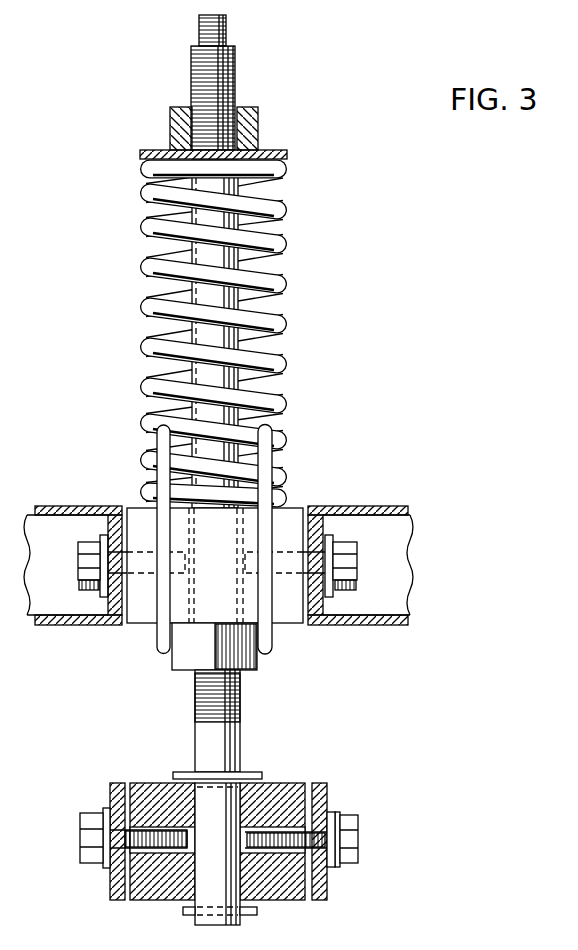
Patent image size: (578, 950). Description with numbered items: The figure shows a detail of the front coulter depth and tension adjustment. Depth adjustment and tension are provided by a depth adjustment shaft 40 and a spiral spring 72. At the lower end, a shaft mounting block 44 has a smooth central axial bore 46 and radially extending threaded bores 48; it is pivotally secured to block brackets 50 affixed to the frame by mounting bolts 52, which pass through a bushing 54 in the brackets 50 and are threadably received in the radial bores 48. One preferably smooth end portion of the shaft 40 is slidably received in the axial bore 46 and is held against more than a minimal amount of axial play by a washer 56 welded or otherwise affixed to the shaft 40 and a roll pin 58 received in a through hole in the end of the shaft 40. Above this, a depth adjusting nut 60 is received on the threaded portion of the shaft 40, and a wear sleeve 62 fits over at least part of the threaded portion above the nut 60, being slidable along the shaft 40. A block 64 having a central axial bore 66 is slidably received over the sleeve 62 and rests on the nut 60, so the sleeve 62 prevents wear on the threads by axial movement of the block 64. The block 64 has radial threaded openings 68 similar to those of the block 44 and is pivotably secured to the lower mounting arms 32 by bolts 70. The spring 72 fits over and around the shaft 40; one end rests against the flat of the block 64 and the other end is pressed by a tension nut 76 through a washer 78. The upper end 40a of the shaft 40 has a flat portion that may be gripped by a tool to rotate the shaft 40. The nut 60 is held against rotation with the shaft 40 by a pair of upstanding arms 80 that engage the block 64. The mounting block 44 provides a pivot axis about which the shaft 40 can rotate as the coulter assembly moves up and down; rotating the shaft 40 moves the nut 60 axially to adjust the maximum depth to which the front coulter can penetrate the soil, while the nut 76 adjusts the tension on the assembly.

The upper end of shaft 40a is at (199, 30).
The depth adjustment shaft 40 is at (201, 88).
The tension nut 76 is at (256, 118).
The washer 78 is at (278, 153).
The spiral spring 72 is at (226, 334).
The wear sleeve 62 is at (205, 372).
The upstanding arms 80 is at (157, 441).
The block 64 is at (196, 546).
The radial threaded openings 68 is at (288, 556).
The bolts 70 is at (90, 566).
The lower pair of arms 32 is at (78, 626).
The central axial bore 66 is at (200, 593).
The depth adjusting nut 60 is at (246, 651).
The washer 56 is at (250, 773).
The central axial bore 46 is at (198, 800).
The shaft mounting block 44 is at (285, 792).
The block brackets 50 is at (118, 788).
The mounting bolts 52 is at (90, 839).
The bushing 54 is at (328, 877).
The radially extending threaded bores 48 is at (250, 846).
The roll pin 58 is at (183, 911).